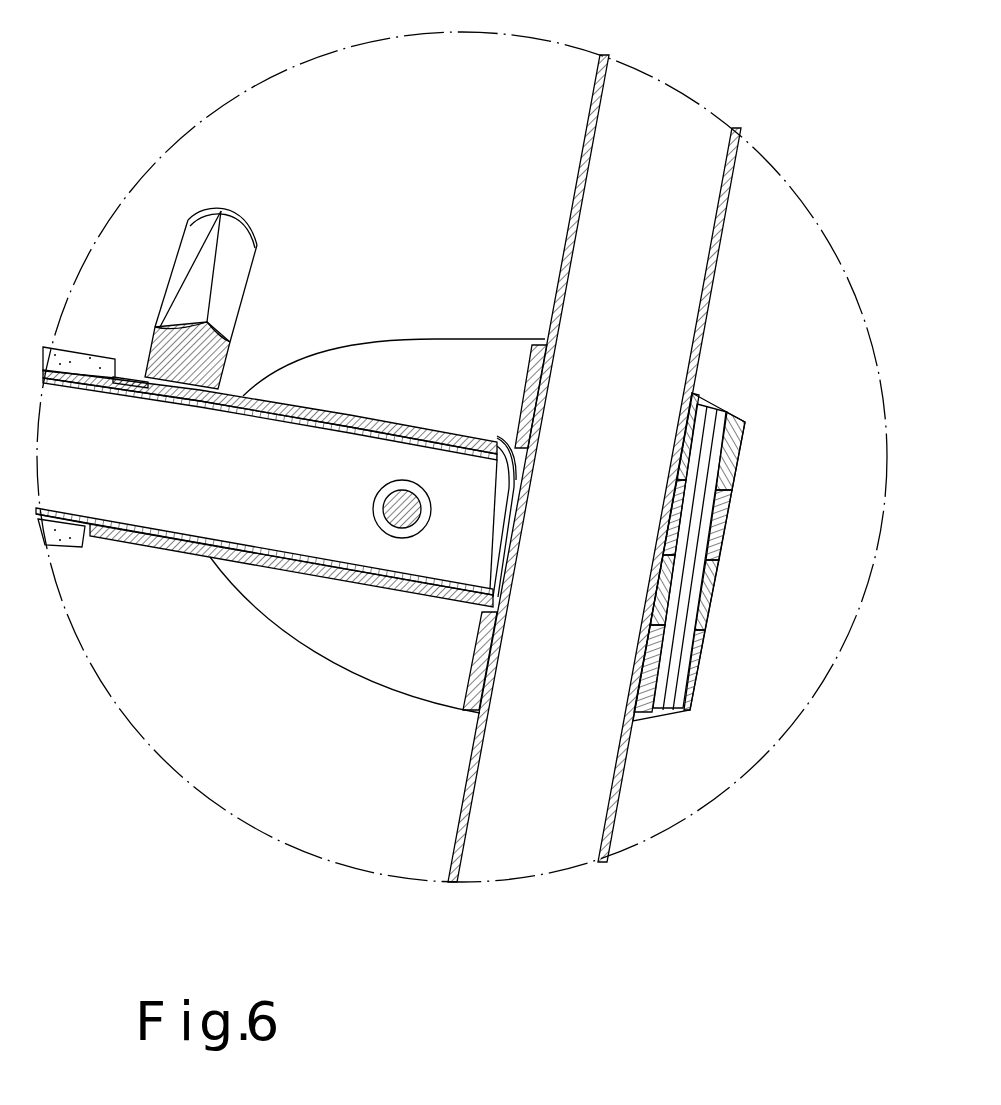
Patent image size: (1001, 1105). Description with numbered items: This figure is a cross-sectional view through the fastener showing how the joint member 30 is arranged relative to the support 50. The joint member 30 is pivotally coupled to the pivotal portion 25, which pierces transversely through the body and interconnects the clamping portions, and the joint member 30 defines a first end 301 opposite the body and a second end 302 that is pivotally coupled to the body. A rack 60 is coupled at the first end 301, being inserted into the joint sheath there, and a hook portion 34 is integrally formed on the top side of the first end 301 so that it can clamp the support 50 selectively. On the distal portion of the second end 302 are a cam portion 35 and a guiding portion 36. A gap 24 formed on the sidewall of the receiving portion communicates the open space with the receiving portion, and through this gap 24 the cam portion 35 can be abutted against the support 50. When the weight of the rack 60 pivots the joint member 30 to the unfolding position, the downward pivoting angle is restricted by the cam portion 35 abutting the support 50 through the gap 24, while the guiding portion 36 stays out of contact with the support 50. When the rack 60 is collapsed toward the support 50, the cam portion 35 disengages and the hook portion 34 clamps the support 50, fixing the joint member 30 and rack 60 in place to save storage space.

The gap 24 is at (519, 398).
The pivotal portion 25 is at (402, 480).
The joint member 30 is at (275, 607).
The first end 301 is at (113, 578).
The second end 302 is at (452, 637).
The hook portion 34 is at (185, 274).
The cam portion 35 is at (481, 618).
The guiding portion 36 is at (499, 438).
The support 50 is at (580, 168).
The rack 60 is at (43, 537).